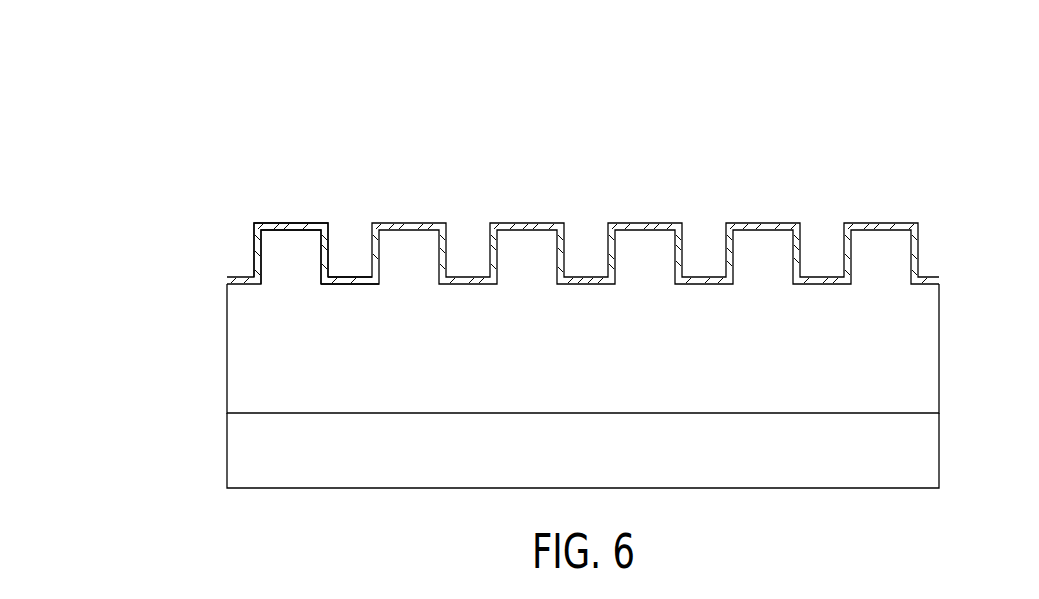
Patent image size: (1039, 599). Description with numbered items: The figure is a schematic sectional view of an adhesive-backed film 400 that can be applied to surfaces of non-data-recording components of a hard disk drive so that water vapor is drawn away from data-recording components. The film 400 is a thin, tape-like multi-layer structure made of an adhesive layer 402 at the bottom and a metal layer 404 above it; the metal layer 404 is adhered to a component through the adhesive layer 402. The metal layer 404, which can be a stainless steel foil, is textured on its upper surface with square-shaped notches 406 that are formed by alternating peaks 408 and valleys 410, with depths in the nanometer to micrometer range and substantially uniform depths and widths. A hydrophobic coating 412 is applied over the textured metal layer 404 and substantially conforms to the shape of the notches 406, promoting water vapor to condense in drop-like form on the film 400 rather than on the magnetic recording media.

The film 400 is at (118, 95).
The adhesive layer 402 is at (930, 460).
The metal layer 404 is at (920, 357).
The notches 406 is at (335, 195).
The peaks 408 is at (292, 223).
The valleys 410 is at (347, 277).
The coating 412 is at (940, 282).